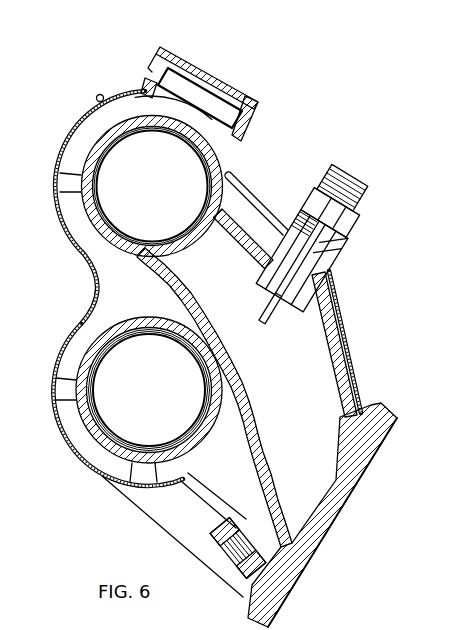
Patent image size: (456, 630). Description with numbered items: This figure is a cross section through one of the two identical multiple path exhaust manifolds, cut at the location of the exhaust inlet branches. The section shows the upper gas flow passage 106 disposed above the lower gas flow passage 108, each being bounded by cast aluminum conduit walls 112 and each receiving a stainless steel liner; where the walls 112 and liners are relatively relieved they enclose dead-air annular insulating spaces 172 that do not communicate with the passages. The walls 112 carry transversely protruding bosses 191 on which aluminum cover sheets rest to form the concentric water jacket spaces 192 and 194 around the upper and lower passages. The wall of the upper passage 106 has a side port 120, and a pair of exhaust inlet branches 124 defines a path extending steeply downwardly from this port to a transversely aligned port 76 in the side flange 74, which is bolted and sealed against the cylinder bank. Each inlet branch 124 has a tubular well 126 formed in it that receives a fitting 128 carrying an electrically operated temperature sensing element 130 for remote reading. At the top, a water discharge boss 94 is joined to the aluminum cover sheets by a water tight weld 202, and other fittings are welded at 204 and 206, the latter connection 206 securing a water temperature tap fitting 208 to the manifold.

The water discharge boss 94 is at (158, 64).
The water tight welded connection 202 is at (147, 78).
The conduit walls 112 is at (190, 128).
The water jacket space 192 is at (68, 140).
The bosses 191 is at (66, 192).
The upper gas flow passage 106 is at (105, 200).
The side openings or ports 120 is at (152, 242).
The weld 204 is at (281, 237).
The fitting 128 is at (358, 219).
The tubular well 126 is at (322, 268).
The temperature sensing element 130 is at (271, 321).
The annular insulating spaces 172 is at (176, 330).
The exhaust inlet branches 124 is at (240, 388).
The water jacket space 194 is at (95, 453).
The lower gas flow passage 108 is at (110, 468).
The water temperature tap fitting 208 is at (212, 537).
The ports 76 is at (315, 552).
The flange 74 is at (287, 586).
The weld connection 206 is at (253, 584).